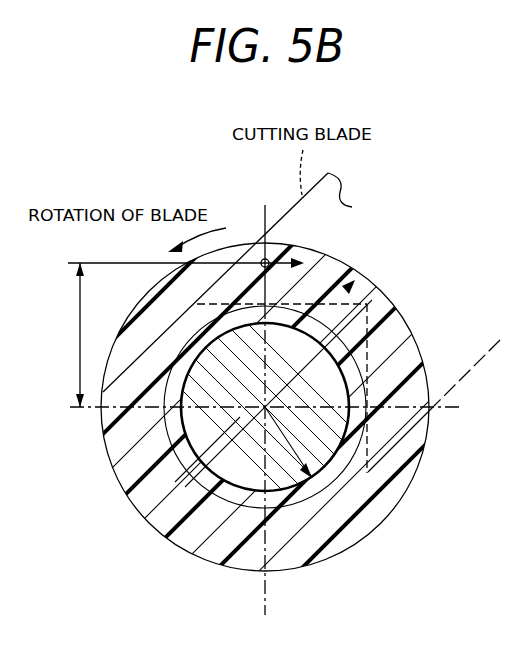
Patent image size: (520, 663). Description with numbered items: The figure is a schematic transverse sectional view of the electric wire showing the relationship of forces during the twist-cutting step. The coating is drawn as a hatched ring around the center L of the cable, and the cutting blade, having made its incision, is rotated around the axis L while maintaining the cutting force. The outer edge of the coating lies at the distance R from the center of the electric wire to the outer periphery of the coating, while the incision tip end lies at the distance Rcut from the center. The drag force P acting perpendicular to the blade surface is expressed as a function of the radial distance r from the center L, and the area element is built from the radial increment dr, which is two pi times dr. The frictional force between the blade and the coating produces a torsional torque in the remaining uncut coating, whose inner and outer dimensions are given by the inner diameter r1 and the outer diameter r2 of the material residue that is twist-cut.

The radial distance r is at (73, 335).
The radial increment dr is at (261, 258).
The outer periphery distance of coating R is at (340, 360).
The incision tip end distance Rcut is at (498, 340).
The inner diameter of material residue r1 is at (297, 462).
The outer diameter of material residue r2 is at (338, 432).
The cable center axis L is at (182, 455).